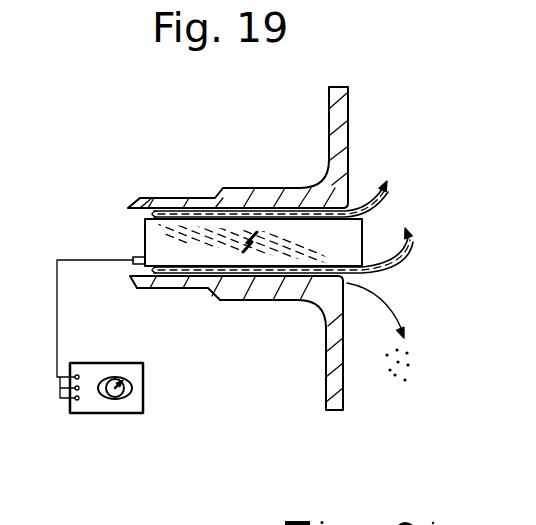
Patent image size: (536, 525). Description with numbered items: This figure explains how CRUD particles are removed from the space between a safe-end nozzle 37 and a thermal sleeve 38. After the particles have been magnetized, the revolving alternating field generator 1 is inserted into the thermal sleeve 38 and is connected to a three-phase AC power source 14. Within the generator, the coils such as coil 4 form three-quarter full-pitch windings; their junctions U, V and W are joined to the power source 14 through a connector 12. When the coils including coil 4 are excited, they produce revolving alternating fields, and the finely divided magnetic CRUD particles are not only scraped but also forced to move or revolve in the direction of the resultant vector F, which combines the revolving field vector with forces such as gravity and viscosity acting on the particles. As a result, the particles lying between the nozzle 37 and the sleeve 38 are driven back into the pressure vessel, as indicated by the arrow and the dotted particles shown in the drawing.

The revolving alternating field generator 1 is at (141, 198).
The coil 4 is at (208, 243).
The connector 12 is at (133, 262).
The three-phase AC power source 14 is at (109, 415).
The safe-end nozzle 37 is at (332, 113).
The thermal sleeve 38 is at (368, 196).
The resultant vector F is at (240, 256).